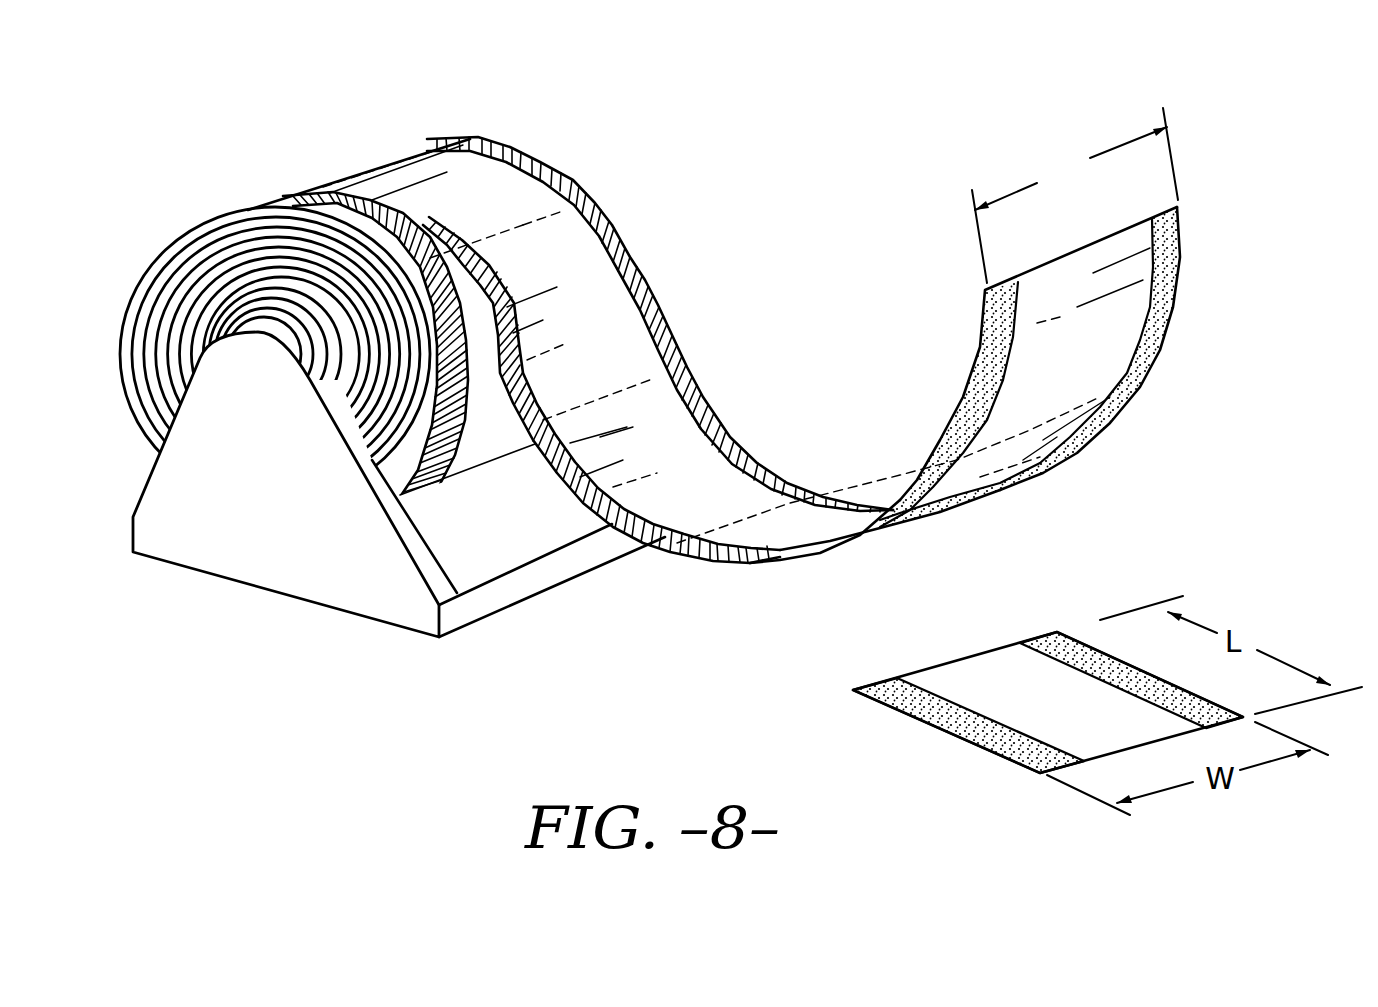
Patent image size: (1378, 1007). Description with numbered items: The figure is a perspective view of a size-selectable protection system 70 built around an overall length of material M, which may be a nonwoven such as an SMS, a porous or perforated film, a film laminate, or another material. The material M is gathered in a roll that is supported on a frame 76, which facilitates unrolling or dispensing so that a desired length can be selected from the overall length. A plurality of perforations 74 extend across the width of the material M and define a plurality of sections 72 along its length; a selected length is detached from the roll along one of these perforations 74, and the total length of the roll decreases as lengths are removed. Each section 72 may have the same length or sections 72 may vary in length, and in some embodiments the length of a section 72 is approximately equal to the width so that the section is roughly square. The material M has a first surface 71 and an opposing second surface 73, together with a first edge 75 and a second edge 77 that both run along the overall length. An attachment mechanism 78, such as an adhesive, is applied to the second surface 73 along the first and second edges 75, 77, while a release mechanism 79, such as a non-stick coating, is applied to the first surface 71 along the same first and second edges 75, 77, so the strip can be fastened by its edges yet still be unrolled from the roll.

The size-selectable protection system 70 is at (677, 422).
The material M is at (158, 270).
The section 72 is at (591, 273).
The perforation 74 is at (523, 225).
The release mechanism 79 is at (641, 323).
The second edge 77 is at (745, 430).
The first surface 71 is at (818, 530).
The first edge 75 is at (693, 560).
The second surface 73 is at (1108, 333).
The attachment mechanism 78 is at (1003, 333).
The frame 76 is at (253, 543).